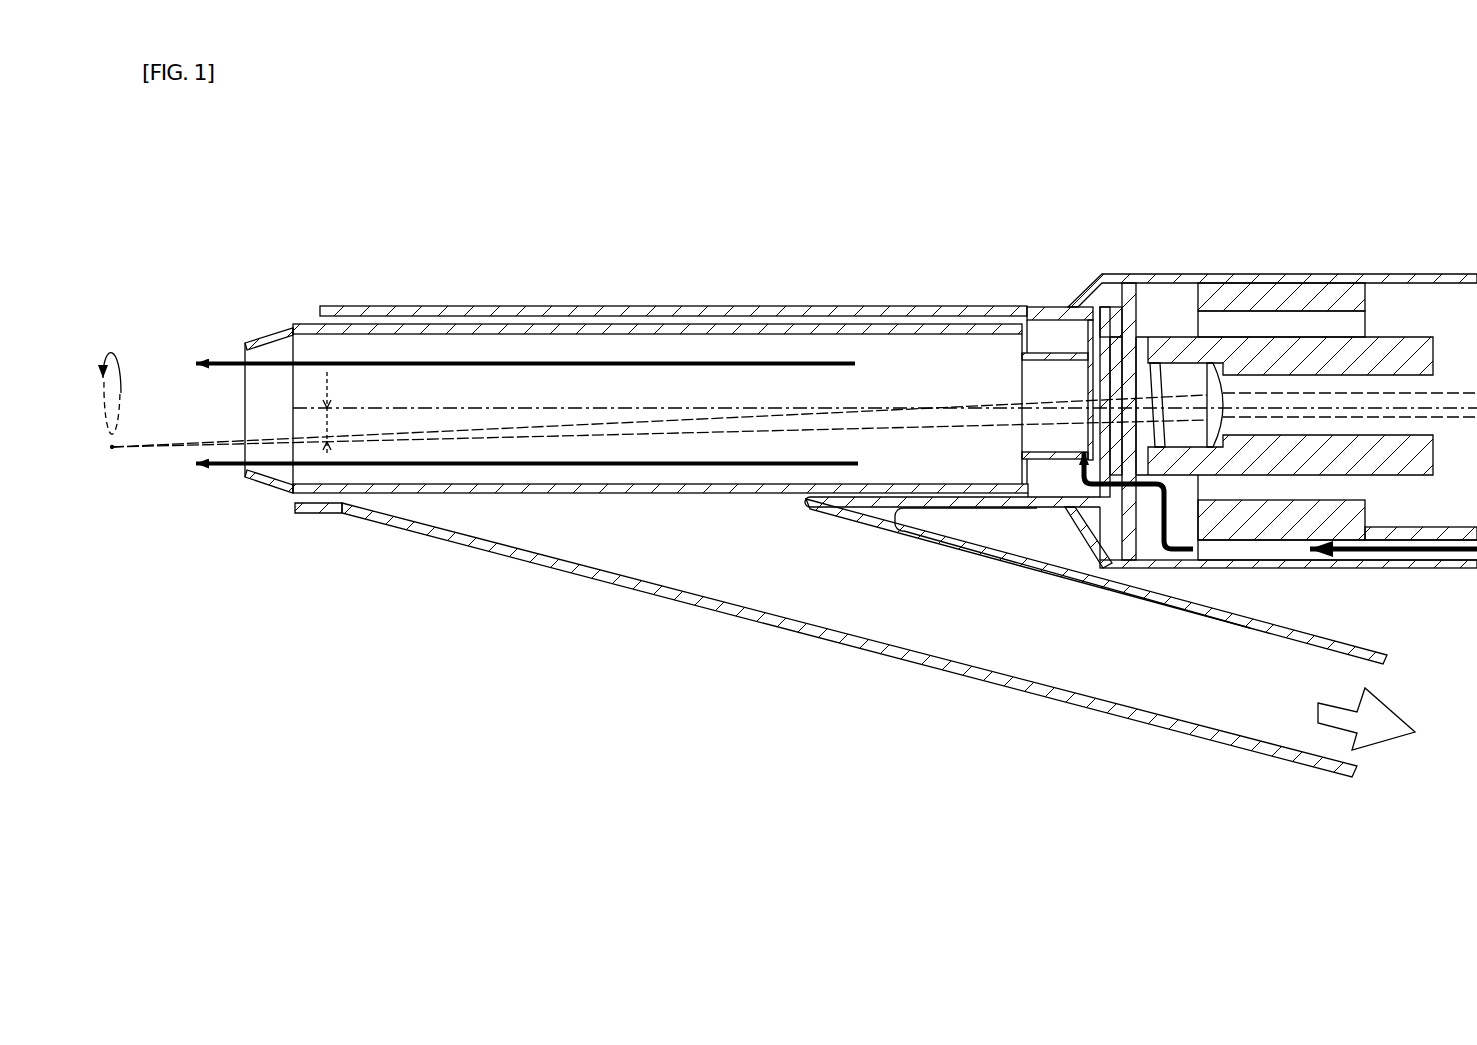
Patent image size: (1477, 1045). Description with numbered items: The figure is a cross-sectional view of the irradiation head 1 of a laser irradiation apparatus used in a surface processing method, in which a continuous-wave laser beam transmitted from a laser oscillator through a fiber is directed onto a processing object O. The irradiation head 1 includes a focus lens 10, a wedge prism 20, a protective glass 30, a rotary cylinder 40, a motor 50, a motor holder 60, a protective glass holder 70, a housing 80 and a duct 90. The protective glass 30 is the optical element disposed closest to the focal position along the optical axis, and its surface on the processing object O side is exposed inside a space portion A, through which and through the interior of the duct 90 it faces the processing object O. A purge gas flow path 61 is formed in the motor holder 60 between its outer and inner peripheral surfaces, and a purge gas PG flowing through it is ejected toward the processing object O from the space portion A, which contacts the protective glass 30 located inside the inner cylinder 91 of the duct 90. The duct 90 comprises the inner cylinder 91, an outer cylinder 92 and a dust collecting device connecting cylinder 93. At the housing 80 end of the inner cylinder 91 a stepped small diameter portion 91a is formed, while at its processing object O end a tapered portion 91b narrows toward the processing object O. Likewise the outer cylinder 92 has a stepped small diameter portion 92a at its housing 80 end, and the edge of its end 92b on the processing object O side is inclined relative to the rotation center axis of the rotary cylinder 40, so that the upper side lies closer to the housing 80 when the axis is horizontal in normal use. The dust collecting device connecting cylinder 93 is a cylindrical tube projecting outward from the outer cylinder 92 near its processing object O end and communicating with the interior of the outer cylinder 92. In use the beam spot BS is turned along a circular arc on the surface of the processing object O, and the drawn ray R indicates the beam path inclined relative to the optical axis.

The irradiation head 1 is at (313, 238).
The focus lens 10 is at (1211, 372).
The wedge prism 20 is at (1152, 377).
The protective glass 30 is at (1112, 365).
The rotary cylinder 40 is at (1283, 356).
The motor 50 is at (1250, 324).
The motor holder 60 is at (1255, 526).
The purge gas flow path 61 is at (1228, 551).
The protective glass holder 70 is at (1132, 529).
The housing 80 is at (1377, 277).
The duct 90 is at (477, 285).
The inner cylinder 91 is at (607, 328).
The small diameter portion 91a is at (1077, 354).
The tapered portion 91b is at (262, 340).
The outer cylinder 92 is at (745, 309).
The small diameter portion 92a is at (1050, 314).
The end 92b is at (295, 514).
The dust collecting device connecting cylinder 93 is at (777, 622).
The space portion A is at (1055, 373).
The purge gas PG is at (582, 351).
The processing object O is at (124, 331).
The beam spot BS is at (112, 452).
The light ray R is at (396, 442).